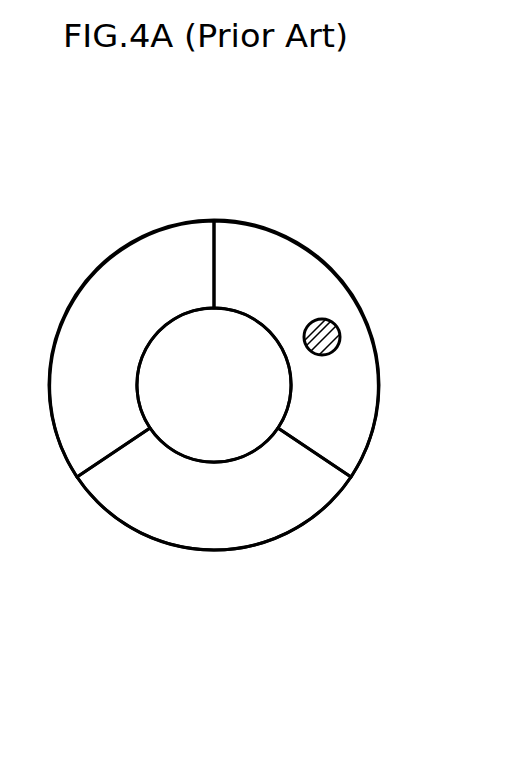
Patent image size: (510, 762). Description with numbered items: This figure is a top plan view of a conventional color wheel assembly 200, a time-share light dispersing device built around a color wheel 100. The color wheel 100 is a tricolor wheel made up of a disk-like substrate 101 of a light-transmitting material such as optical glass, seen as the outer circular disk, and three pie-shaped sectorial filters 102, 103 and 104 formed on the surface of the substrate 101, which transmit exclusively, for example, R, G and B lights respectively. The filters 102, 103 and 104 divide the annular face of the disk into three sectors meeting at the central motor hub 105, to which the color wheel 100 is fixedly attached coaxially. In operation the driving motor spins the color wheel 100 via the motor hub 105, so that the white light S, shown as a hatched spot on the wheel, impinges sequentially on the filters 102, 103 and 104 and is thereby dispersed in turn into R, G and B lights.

The color wheel 100 is at (333, 267).
The disk-like substrate 101 is at (103, 512).
The pie-shaped filter 102 is at (348, 418).
The pie-shaped filter 103 is at (255, 520).
The pie-shaped filter 104 is at (130, 283).
The motor hub 105 is at (228, 337).
The color wheel assembly 200 is at (138, 633).
The white light S is at (340, 327).